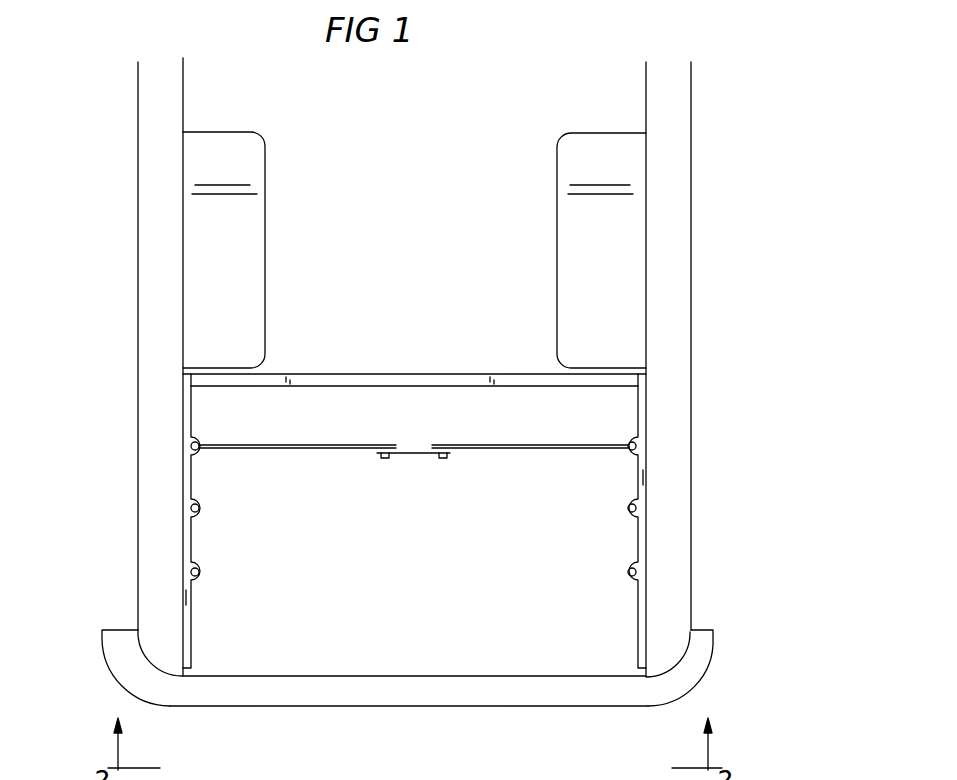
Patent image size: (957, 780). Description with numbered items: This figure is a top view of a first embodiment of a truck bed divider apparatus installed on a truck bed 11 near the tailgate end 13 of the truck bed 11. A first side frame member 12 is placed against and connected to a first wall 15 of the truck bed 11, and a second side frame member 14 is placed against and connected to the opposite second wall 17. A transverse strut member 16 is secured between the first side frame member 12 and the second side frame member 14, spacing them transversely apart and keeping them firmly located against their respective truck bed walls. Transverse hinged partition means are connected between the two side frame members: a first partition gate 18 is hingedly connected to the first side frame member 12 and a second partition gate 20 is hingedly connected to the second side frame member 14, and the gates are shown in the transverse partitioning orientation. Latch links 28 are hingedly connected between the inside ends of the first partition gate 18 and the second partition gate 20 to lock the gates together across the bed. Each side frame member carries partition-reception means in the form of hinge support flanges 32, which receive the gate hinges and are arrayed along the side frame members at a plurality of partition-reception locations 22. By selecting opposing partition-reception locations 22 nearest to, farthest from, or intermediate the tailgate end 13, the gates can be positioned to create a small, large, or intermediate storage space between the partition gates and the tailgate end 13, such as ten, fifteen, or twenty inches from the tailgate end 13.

The truck bed 11 is at (418, 598).
The first side frame member 12 is at (185, 532).
The tailgate end 13 is at (275, 670).
The second side frame member 14 is at (640, 547).
The first wall 15 is at (155, 627).
The transverse strut member 16 is at (410, 374).
The second wall 17 is at (672, 600).
The first partition gate 18 is at (305, 445).
The second partition gate 20 is at (518, 445).
The partition-reception locations 22 is at (205, 456).
The latch links 28 is at (415, 446).
The hinge support flanges 32 is at (197, 582).